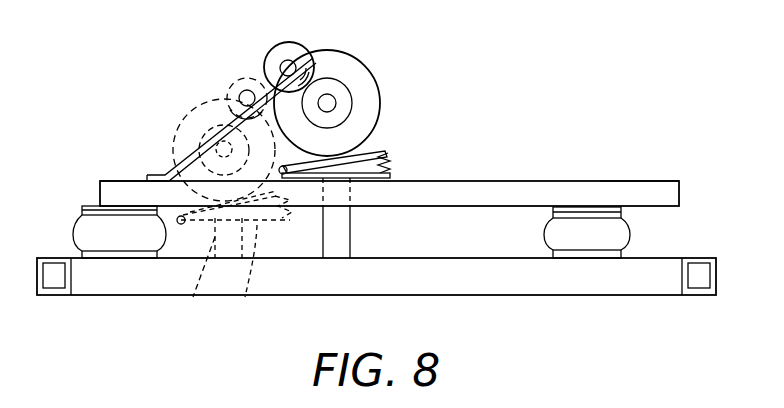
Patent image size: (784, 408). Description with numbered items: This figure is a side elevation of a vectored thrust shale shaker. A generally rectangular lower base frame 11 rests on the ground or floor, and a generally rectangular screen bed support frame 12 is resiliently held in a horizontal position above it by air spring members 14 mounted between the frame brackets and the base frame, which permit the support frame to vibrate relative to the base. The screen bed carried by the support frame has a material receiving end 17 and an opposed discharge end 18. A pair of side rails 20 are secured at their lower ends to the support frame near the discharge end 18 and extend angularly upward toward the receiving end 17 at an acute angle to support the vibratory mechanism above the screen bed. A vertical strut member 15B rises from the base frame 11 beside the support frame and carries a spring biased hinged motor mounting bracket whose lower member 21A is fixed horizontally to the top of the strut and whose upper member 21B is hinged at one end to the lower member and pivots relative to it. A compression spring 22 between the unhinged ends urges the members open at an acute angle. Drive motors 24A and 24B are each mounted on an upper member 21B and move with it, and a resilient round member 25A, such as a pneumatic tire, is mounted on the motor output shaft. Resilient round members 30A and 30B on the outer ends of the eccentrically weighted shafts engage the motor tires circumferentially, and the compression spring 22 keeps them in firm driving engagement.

The lower base frame 11 is at (622, 286).
The screen bed support frame 12 is at (500, 192).
The air spring members 14 is at (88, 237).
The vertical strut member 15B is at (187, 285).
The material receiving end 17 is at (626, 192).
The discharge end 18 is at (118, 190).
The side rails 20 is at (183, 150).
The lower member of hinged bracket 21A is at (392, 180).
The upper member of hinged bracket 21B is at (385, 150).
The compression spring 22 is at (390, 162).
The drive motor 24A is at (380, 100).
The drive motor 24B is at (194, 106).
The resilient round member 25A is at (347, 83).
The resilient round member 30A is at (298, 40).
The resilient round member 30B is at (247, 72).